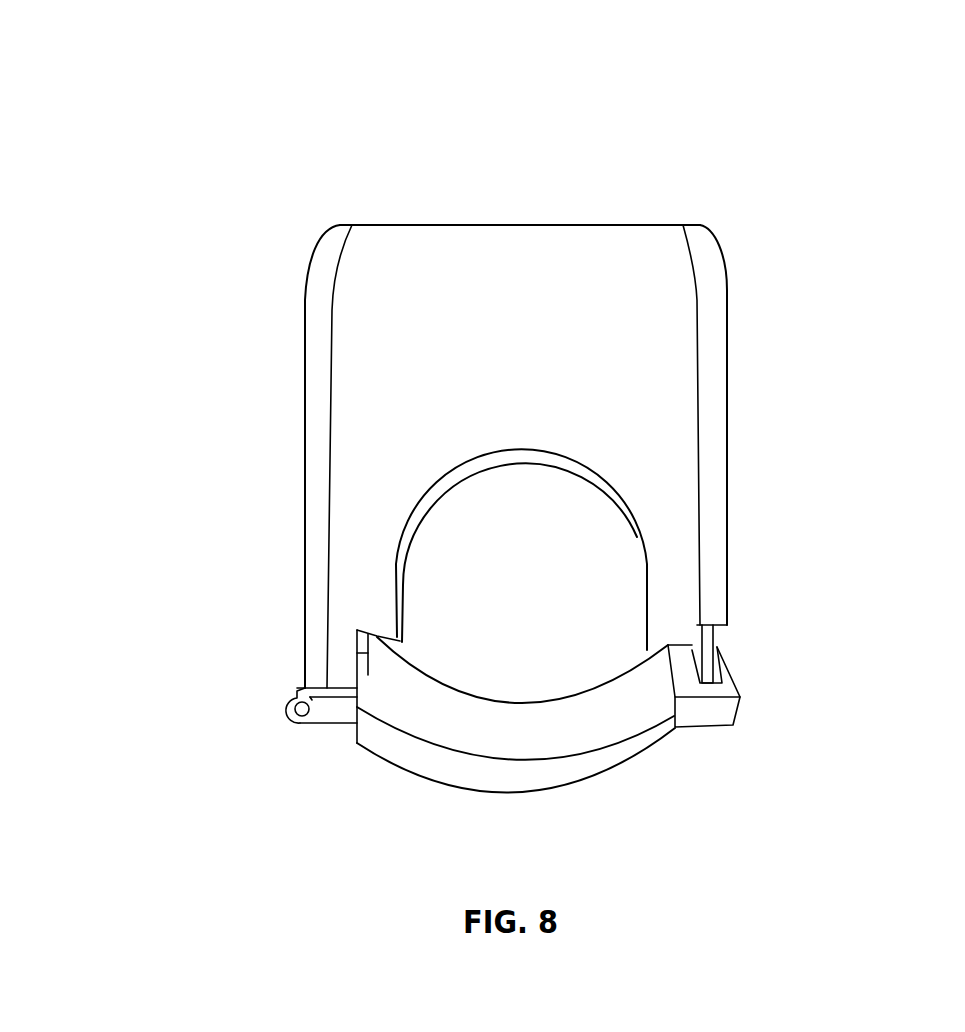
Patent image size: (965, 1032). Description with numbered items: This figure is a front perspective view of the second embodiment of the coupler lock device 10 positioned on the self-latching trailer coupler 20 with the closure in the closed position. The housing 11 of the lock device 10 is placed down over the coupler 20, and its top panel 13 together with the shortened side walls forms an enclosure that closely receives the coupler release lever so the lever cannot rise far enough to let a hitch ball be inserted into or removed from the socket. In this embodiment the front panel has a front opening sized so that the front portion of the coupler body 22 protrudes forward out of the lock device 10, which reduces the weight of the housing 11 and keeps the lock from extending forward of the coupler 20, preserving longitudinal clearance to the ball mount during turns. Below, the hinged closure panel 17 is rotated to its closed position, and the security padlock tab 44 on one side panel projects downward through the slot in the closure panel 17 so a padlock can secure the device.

The coupler lock device 10 is at (388, 213).
The housing 11 is at (713, 337).
The top panel 13 is at (617, 238).
The closure panel 17 is at (723, 717).
The coupler 20 is at (381, 680).
The coupler body 22 is at (482, 668).
The security padlock tab 44 is at (710, 642).